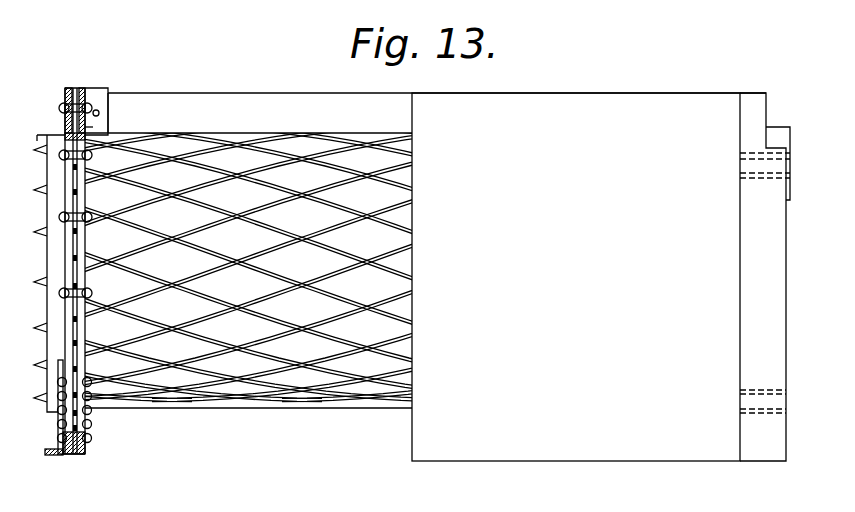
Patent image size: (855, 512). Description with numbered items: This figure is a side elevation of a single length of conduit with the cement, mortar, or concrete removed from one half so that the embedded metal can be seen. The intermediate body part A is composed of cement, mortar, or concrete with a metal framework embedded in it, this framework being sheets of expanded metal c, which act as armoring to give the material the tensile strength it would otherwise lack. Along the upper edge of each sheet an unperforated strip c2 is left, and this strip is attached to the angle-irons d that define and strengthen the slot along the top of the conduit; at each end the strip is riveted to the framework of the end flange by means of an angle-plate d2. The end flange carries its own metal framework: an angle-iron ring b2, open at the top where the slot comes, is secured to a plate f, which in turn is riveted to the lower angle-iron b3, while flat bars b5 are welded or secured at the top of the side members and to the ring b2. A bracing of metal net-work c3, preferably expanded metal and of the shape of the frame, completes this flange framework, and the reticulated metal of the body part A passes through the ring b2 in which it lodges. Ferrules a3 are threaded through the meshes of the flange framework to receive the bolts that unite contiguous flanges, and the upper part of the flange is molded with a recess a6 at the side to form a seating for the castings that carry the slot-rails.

The body part A is at (576, 277).
The ferrules a3 is at (752, 170).
The recess a6 is at (789, 144).
The angle-iron ring b2 is at (48, 252).
The lower angle-iron b3 is at (60, 456).
The flat bars b5 is at (90, 128).
The expanded metal c is at (427, 265).
The unperforated strip c2 is at (762, 277).
The metal net-work c3 is at (74, 179).
The angle-irons d is at (437, 113).
The angle-plate d2 is at (103, 92).
The plate f is at (59, 418).